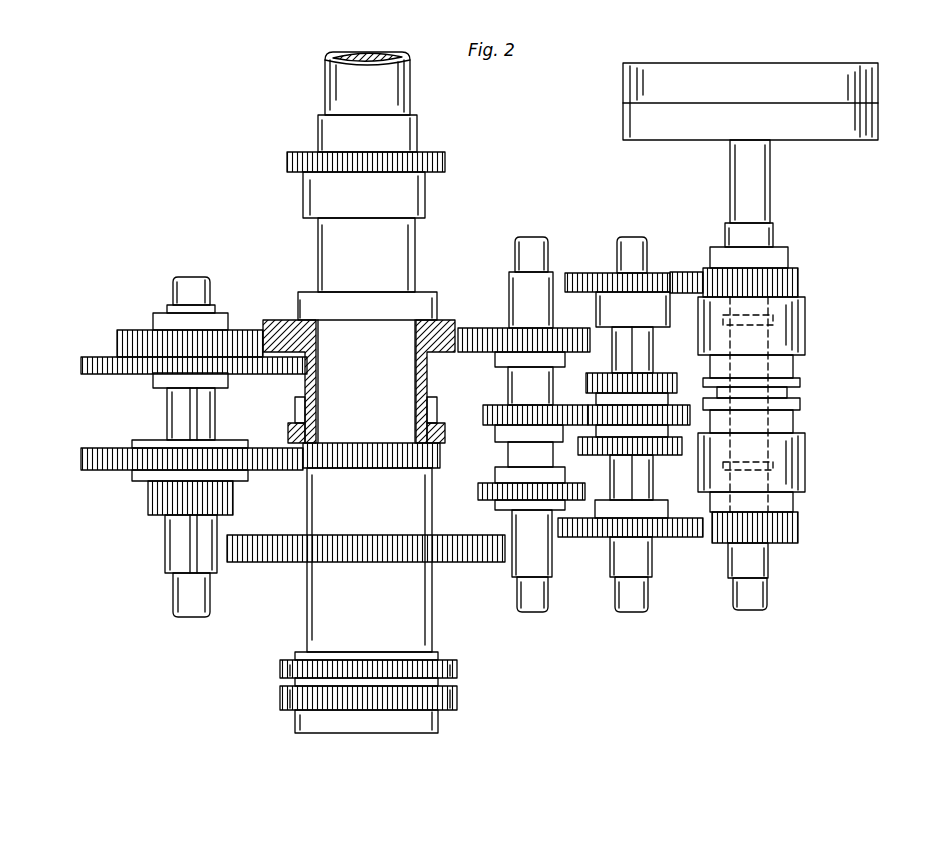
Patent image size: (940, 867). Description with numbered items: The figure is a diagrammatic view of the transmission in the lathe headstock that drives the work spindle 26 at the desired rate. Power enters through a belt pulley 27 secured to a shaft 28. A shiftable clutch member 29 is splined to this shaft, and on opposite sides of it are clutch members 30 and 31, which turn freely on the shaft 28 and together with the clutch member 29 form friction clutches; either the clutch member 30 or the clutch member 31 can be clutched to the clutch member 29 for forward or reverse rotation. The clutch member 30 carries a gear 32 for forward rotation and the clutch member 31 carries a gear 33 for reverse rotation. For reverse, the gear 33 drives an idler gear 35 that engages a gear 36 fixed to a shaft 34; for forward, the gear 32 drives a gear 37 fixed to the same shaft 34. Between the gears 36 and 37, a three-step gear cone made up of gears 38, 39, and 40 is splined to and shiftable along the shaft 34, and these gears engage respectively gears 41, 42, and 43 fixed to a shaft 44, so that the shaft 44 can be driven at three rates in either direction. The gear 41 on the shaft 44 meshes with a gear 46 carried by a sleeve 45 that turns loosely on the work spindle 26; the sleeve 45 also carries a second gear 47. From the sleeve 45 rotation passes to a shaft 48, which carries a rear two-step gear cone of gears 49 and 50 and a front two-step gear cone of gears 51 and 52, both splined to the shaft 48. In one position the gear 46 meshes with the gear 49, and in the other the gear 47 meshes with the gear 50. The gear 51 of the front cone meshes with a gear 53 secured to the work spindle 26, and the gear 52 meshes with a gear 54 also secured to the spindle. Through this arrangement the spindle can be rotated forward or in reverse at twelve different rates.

The work spindle 26 is at (432, 610).
The belt pulley 27 is at (878, 96).
The shaft 28 is at (770, 200).
The shiftable clutch member 29 is at (800, 383).
The clutch member 30 is at (805, 468).
The clutch member 31 is at (805, 330).
The gear 32 is at (798, 530).
The gear 33 is at (798, 290).
The shaft 34 is at (647, 250).
The idler gear 35 is at (690, 272).
The gear 36 is at (580, 273).
The gear 37 is at (690, 537).
The gear 38 is at (660, 375).
The gear 39 is at (676, 405).
The gear 40 is at (665, 455).
The gear 41 is at (560, 340).
The gear 42 is at (492, 408).
The gear 43 is at (492, 496).
The shaft 44 is at (548, 250).
The sleeve 45 is at (437, 388).
The gear 46 is at (452, 328).
The second gear 47 is at (294, 412).
The shaft 48 is at (210, 293).
The gear 49 is at (118, 340).
The gear 50 is at (120, 372).
The gear 51 is at (81, 459).
The gear 52 is at (148, 500).
The gear 53 is at (440, 460).
The gear 54 is at (272, 562).